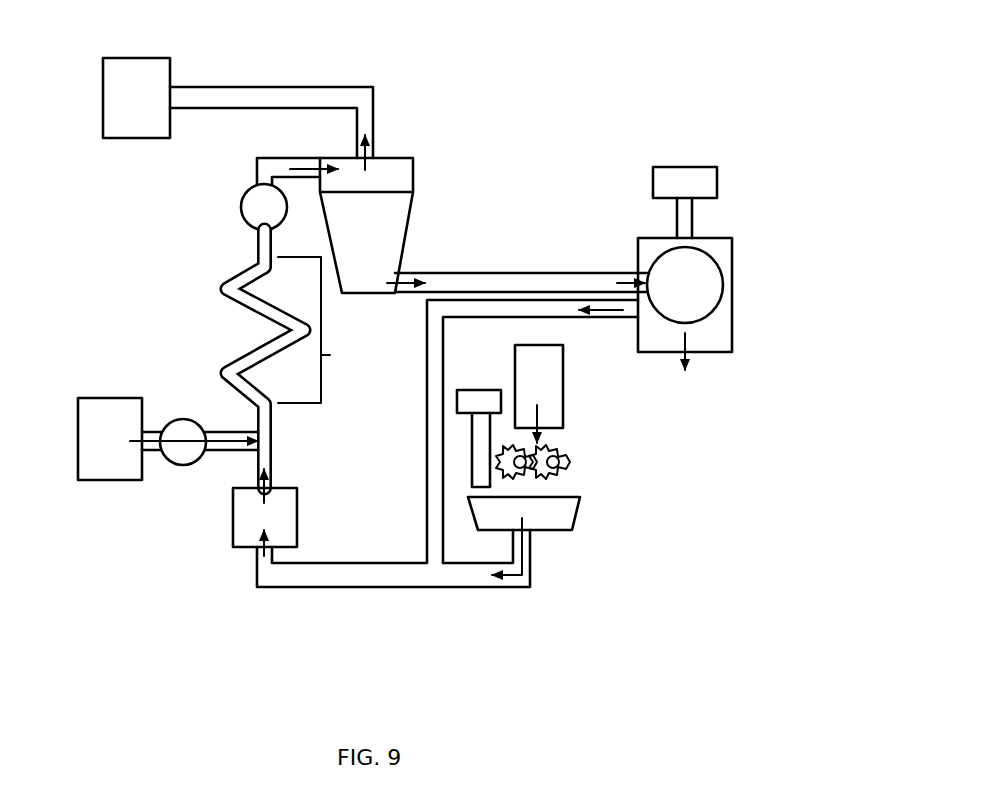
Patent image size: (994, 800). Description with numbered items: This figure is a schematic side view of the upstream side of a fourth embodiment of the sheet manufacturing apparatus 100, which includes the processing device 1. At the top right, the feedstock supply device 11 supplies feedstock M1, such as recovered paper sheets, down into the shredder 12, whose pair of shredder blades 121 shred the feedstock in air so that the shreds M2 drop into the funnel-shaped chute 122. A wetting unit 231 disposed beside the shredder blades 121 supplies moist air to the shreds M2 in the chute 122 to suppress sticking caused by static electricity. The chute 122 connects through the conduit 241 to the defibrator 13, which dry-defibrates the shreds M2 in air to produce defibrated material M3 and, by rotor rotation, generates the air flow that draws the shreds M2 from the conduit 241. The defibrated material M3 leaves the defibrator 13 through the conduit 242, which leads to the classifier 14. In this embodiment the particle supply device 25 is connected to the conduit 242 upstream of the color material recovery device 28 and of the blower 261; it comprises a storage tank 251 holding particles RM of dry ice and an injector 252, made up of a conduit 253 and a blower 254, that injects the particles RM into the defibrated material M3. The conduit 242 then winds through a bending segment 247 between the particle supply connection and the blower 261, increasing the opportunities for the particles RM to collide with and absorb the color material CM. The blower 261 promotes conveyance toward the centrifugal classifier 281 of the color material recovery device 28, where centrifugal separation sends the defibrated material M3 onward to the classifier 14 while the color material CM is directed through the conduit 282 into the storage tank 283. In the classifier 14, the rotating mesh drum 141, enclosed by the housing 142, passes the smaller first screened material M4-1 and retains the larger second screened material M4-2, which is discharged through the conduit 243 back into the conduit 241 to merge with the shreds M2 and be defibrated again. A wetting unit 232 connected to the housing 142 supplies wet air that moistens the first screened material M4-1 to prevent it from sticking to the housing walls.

The sheet manufacturing apparatus 100 is at (675, 68).
The processing device 1 is at (733, 655).
The color material recovery device 28 is at (408, 82).
The centrifugal classifier 281 is at (413, 212).
The conduit 282 is at (285, 87).
The storage tank 283 is at (133, 58).
The blower 261 is at (242, 197).
The conduit 242 is at (257, 240).
The bending segment 247 is at (325, 330).
The particle supply device 25 is at (163, 297).
The storage tank 251 is at (100, 398).
The injector 252 is at (190, 333).
The conduit 253 is at (150, 432).
The blower 254 is at (183, 420).
The defibrator 13 is at (233, 538).
The conduit 241 is at (480, 587).
The conduit 243 is at (500, 300).
The classifier 14 is at (751, 231).
The drum 141 is at (719, 260).
The housing 142 is at (738, 222).
The wetting unit 232 is at (692, 167).
The wetting unit 231 is at (478, 390).
The feedstock supply device 11 is at (563, 357).
The shredder 12 is at (582, 456).
The shredder blades 121 is at (522, 472).
The chute 122 is at (566, 513).
The feedstock M1 is at (540, 420).
The shreds M2 is at (524, 548).
The defibrated material M3 is at (312, 165).
The first screened material M4-1 is at (690, 345).
The second screened material M4-2 is at (595, 300).
The color material CM is at (374, 143).
The particles RM is at (185, 445).